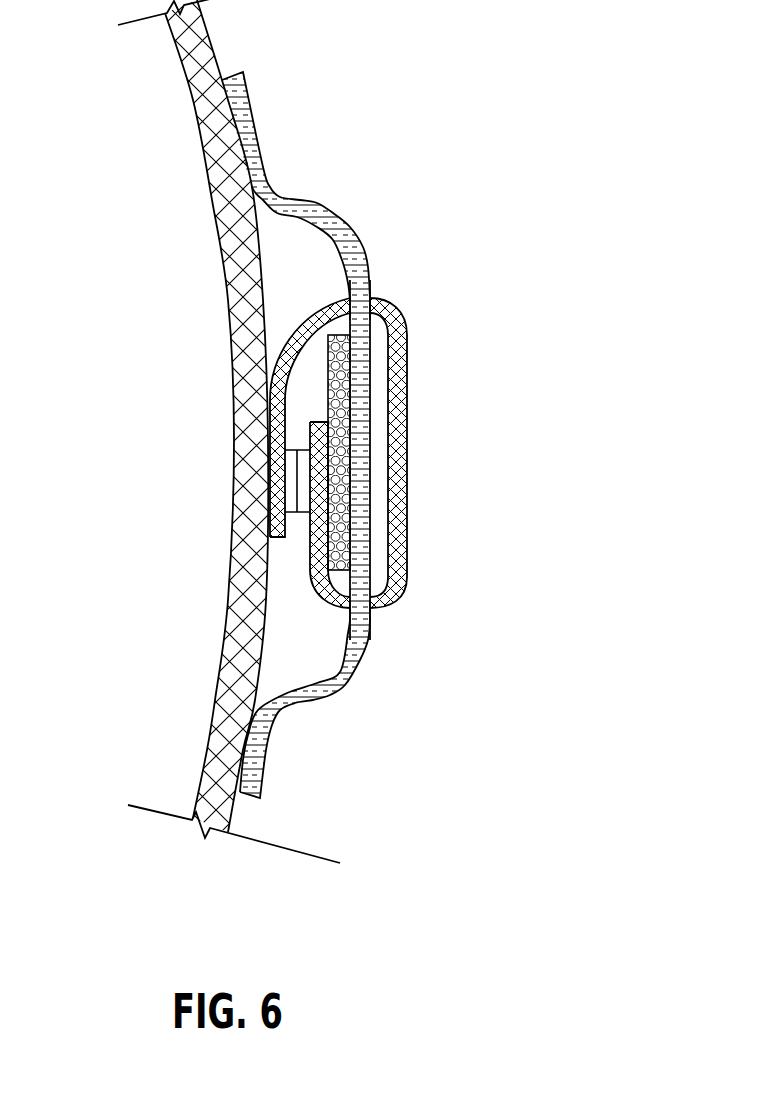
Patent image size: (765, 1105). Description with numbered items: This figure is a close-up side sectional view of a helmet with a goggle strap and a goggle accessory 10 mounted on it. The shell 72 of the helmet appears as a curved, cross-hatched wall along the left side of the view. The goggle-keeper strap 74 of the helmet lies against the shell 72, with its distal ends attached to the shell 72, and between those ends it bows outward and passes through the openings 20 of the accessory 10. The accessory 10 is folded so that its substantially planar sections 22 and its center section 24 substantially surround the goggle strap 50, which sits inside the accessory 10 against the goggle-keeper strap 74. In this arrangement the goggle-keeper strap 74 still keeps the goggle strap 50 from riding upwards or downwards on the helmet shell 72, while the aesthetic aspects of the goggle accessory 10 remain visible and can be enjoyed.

The goggle accessory 10 is at (391, 450).
The openings 20 is at (380, 281).
The substantially planar sections 22 is at (287, 355).
The center section 24 is at (405, 497).
The goggle strap 50 is at (340, 428).
The shell 72 is at (226, 727).
The goggle-keeper strap 74 is at (310, 212).